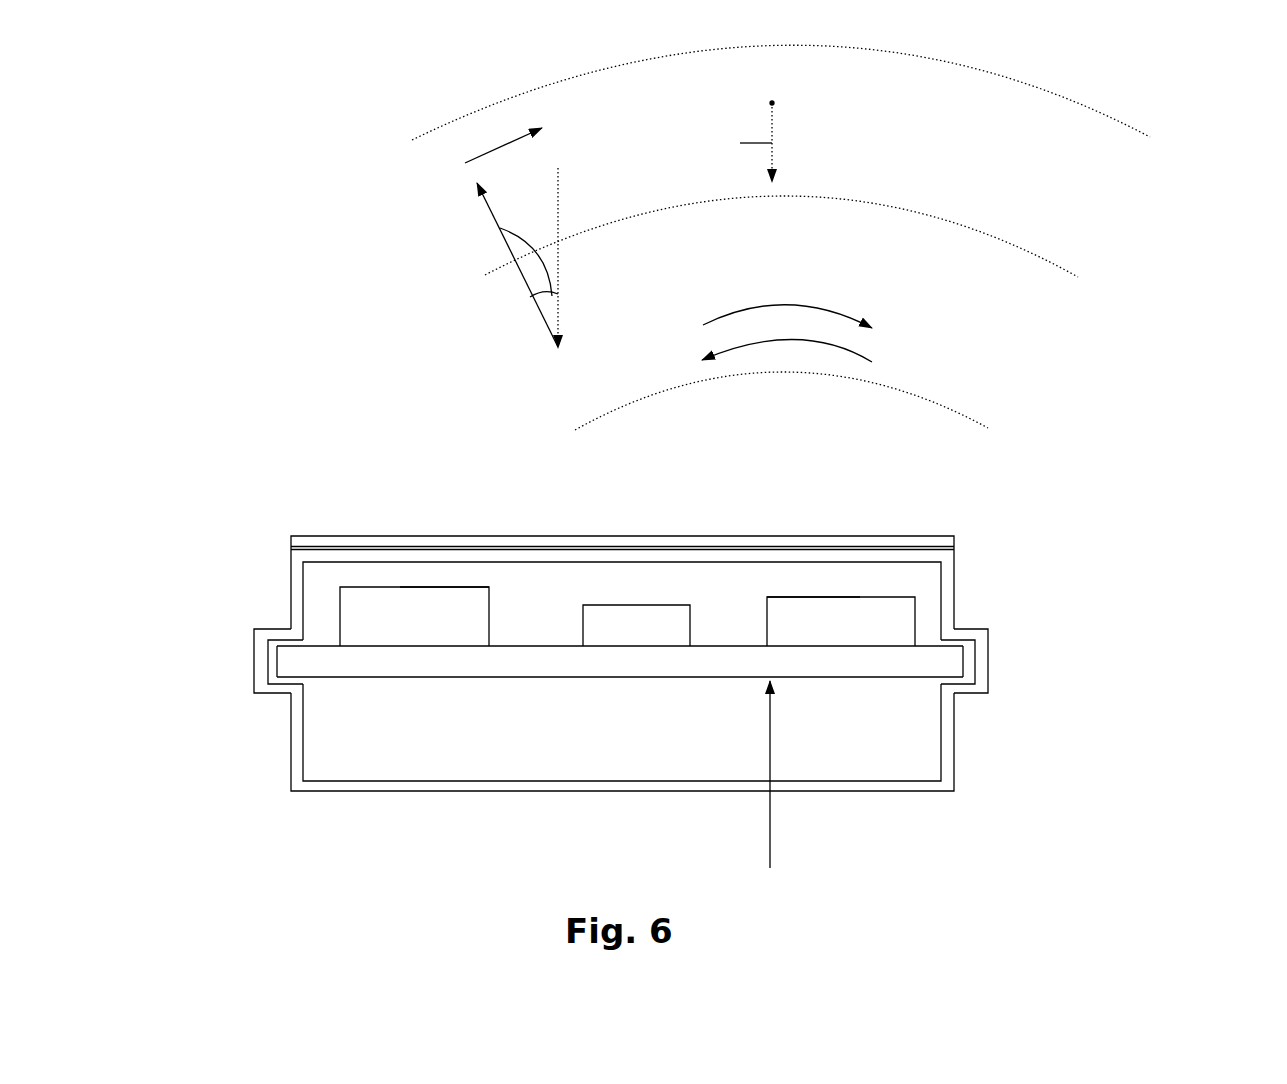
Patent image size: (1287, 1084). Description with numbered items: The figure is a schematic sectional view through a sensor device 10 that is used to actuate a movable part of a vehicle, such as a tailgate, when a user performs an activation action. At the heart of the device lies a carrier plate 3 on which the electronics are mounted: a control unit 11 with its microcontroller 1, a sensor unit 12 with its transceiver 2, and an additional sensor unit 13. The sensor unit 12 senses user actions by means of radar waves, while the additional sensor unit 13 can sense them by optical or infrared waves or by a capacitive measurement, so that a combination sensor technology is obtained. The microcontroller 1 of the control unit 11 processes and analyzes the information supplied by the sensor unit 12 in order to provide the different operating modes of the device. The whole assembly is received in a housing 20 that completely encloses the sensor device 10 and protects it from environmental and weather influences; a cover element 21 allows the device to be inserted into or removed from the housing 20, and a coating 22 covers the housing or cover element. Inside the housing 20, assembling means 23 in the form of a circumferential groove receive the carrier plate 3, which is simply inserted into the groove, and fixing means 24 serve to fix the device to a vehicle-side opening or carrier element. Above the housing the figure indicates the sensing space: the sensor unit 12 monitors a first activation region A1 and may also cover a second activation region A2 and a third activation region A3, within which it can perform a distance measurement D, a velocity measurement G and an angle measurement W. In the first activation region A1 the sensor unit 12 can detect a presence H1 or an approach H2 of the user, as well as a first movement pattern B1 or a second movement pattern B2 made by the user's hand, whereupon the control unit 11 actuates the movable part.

The microcontroller 1 is at (388, 623).
The transceiver 2 is at (787, 623).
The carrier plate 3 is at (480, 663).
The sensor device 10 is at (773, 796).
The control unit 11 is at (449, 587).
The sensor unit 12 is at (793, 594).
The additional sensor unit 13 is at (613, 623).
The housing 20 is at (880, 782).
The cover element 21 is at (927, 550).
The coating 22 is at (883, 546).
The assembling means 23 is at (272, 660).
The fixing means 24 is at (268, 626).
The velocity measurement G is at (500, 145).
The angle measurement W is at (500, 228).
The distance measurement D is at (528, 290).
The presence H1 is at (772, 103).
The approach H2 is at (772, 143).
The first movement pattern B1 is at (733, 312).
The second movement pattern B2 is at (747, 345).
The first activation region A1 is at (1150, 137).
The second activation region A2 is at (1078, 277).
The third activation region A3 is at (990, 428).